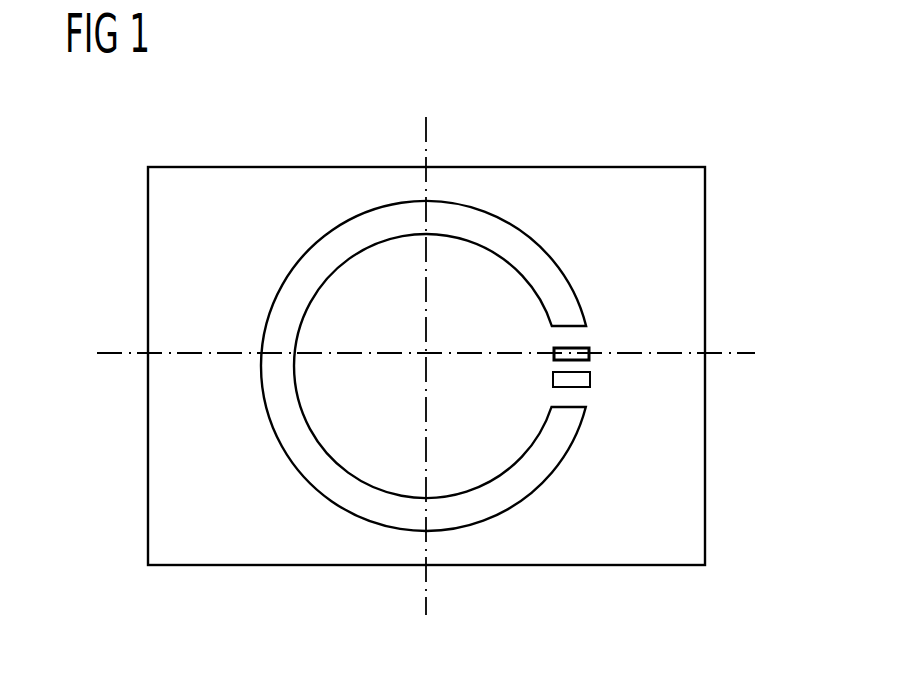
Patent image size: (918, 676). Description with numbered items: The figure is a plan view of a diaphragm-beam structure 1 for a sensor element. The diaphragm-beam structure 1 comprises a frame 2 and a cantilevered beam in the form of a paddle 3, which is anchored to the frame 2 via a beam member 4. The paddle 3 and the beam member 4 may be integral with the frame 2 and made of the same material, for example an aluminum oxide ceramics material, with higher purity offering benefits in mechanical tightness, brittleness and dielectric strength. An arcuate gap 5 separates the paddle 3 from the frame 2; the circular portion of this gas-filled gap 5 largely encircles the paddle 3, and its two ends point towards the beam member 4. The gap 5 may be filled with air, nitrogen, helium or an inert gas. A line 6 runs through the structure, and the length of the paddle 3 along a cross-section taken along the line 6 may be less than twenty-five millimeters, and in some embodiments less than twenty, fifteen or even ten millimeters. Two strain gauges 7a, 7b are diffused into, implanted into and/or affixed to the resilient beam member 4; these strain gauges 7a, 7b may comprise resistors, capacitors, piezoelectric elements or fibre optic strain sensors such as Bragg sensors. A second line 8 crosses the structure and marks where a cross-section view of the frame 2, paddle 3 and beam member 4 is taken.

The diaphragm-beam structure 1 is at (537, 89).
The frame 2 is at (616, 182).
The paddle 3 is at (330, 413).
The beam member 4 is at (603, 331).
The arcuate gap 5 is at (298, 291).
The line 6 is at (418, 130).
The strain gauge 7a is at (590, 355).
The strain gauge 7b is at (553, 378).
The line 8 is at (740, 355).